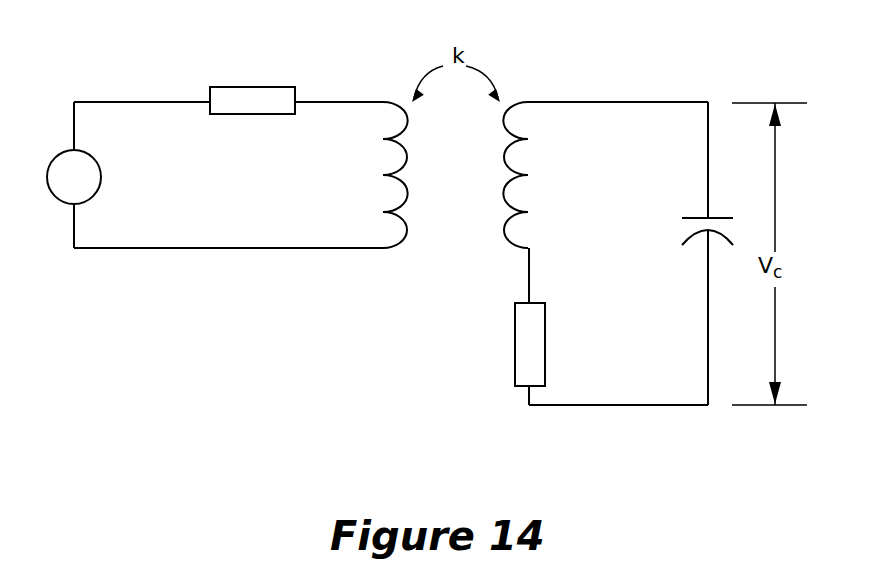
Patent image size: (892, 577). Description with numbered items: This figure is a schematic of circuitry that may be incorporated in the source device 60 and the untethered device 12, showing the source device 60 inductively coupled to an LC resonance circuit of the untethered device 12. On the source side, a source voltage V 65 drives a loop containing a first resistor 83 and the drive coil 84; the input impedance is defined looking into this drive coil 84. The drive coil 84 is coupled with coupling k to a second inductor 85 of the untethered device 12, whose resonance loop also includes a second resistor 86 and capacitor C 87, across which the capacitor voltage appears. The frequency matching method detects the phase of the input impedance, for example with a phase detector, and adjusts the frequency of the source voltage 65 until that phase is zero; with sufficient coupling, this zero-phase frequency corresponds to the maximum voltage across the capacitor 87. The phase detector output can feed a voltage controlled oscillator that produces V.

The untethered device 12 is at (555, 452).
The source device 60 is at (163, 285).
The source voltage V 65 is at (47, 174).
The resistor R1 83 is at (253, 87).
The drive coil L1 84 is at (408, 192).
The inductor L2 85 is at (500, 197).
The resistor R2 86 is at (517, 355).
The capacitor C 87 is at (693, 217).